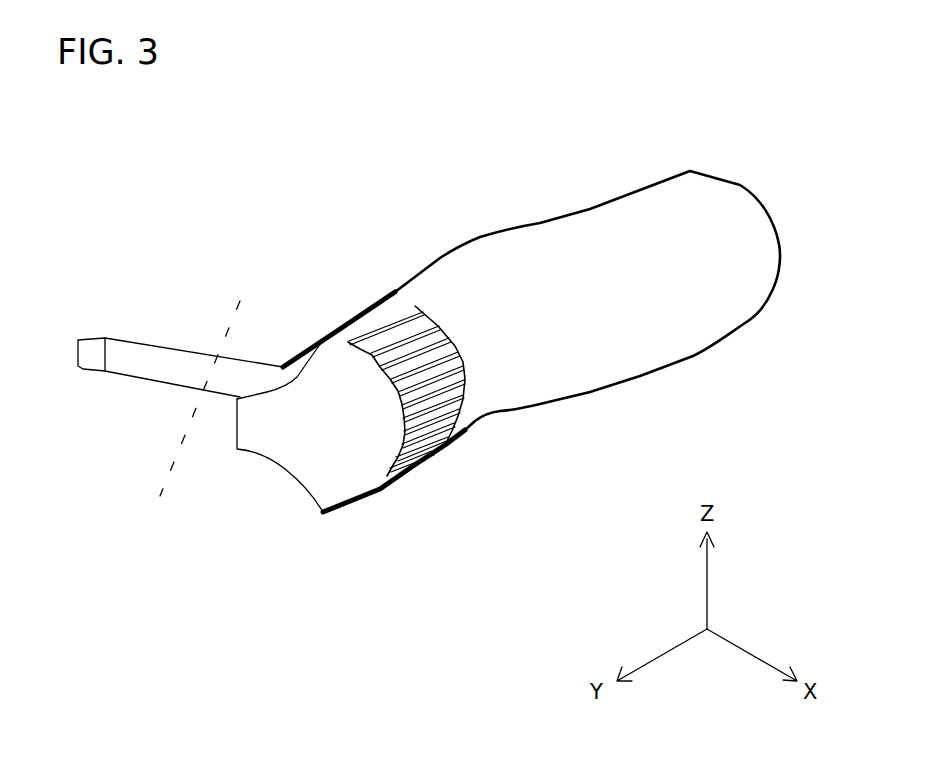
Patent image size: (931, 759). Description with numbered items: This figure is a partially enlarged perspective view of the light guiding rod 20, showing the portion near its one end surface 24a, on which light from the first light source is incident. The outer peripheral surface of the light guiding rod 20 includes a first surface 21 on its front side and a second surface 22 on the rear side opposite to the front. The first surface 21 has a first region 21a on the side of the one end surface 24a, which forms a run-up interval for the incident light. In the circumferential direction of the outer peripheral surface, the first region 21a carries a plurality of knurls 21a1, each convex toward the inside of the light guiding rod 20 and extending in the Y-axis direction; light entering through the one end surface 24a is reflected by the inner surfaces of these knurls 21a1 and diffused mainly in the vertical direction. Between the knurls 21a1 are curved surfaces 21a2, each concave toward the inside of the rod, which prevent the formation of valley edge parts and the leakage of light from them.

The light guiding rod 20 is at (602, 167).
The first surface 21 is at (640, 360).
The first region 21a is at (441, 445).
The knurl 21a1 is at (366, 340).
The curved surface 21a2 is at (400, 322).
The second surface 22 is at (232, 427).
The one end surface 24a is at (298, 460).